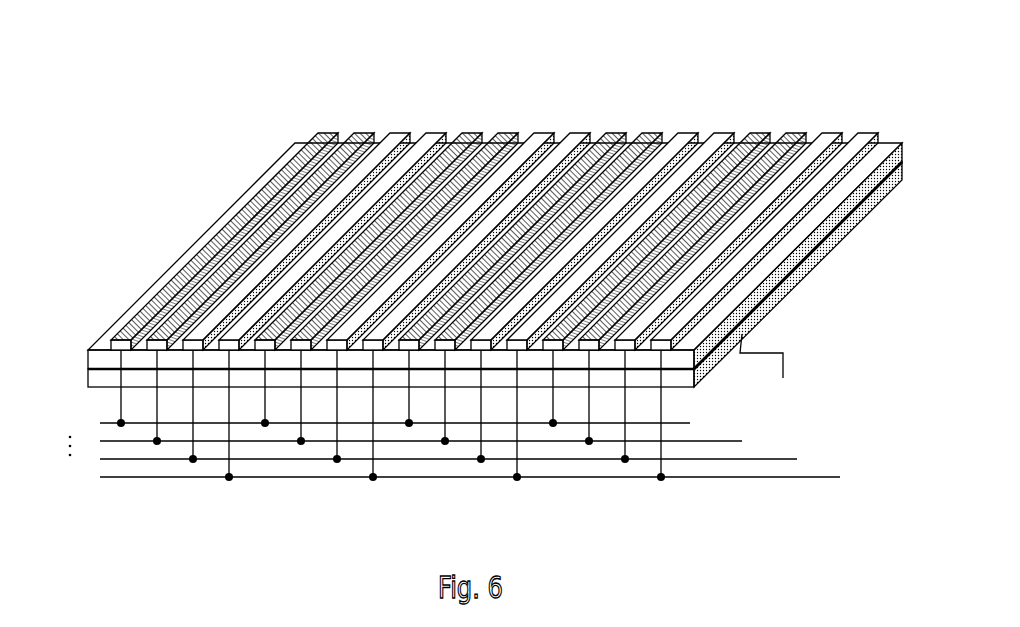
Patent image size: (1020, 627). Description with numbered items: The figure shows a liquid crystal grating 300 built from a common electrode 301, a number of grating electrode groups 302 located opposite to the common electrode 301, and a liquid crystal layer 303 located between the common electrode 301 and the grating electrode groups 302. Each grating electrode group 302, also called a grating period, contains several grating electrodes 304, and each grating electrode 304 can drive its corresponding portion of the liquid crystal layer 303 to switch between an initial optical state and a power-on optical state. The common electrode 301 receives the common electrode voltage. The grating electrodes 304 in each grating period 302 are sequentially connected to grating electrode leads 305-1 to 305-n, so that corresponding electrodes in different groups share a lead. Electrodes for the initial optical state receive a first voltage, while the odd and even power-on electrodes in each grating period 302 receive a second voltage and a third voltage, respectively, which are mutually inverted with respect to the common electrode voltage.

The liquid crystal grating 300 is at (150, 72).
The common electrode 301 is at (832, 247).
The grating electrode group 302 is at (498, 210).
The liquid crystal layer 303 is at (760, 312).
The grating electrode 304 is at (745, 217).
The grating electrode lead 305-1 is at (356, 423).
The grating electrode lead 305-n is at (431, 478).